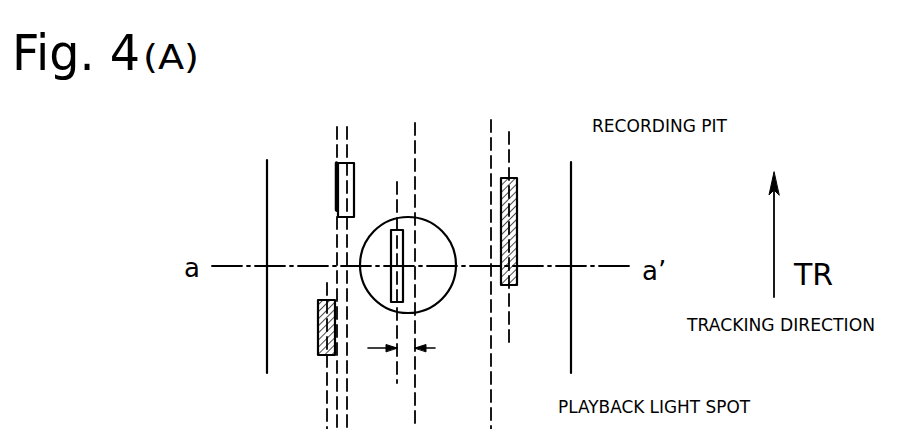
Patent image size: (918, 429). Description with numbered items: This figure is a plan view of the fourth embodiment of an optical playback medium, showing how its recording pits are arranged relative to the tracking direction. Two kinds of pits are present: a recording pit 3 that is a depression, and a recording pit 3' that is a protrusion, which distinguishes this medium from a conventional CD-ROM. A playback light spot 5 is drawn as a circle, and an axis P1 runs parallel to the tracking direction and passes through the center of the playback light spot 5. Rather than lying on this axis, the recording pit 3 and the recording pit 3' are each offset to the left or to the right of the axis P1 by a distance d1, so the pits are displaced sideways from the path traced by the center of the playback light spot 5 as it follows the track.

The recording pit (depression) 3 is at (374, 195).
The recording pit (protrusion) 3' is at (436, 264).
The playback light spot 5 is at (428, 309).
The axis P1 is at (415, 190).
The distance d1 is at (408, 366).